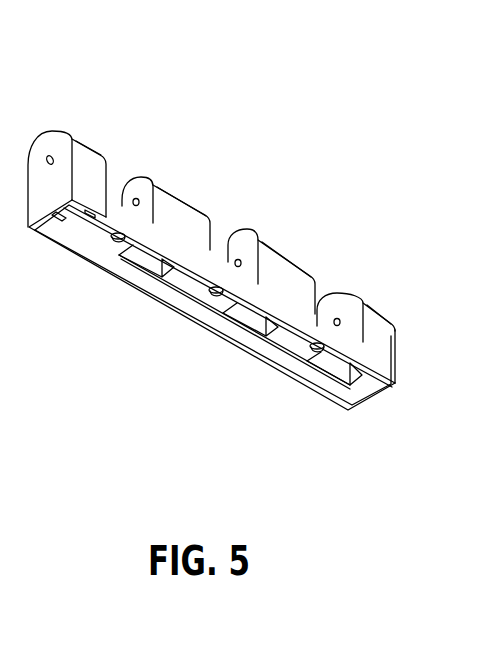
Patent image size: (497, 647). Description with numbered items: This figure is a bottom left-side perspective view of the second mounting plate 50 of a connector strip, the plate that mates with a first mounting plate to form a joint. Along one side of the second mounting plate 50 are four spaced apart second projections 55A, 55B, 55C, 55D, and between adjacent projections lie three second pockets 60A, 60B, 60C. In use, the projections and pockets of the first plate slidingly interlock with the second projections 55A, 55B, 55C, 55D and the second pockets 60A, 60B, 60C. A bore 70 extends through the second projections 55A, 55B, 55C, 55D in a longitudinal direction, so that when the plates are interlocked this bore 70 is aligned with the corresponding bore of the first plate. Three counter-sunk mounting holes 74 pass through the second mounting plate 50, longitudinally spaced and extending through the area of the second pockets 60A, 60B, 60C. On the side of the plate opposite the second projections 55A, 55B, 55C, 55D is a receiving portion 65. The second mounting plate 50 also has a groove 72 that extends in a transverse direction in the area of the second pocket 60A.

The second mounting plate 50 is at (204, 203).
The second projection 55A is at (78, 162).
The second projection 55B is at (168, 205).
The second projection 55C is at (285, 273).
The second projection 55D is at (380, 338).
The second pocket 60A is at (136, 199).
The second pocket 60B is at (227, 244).
The second pocket 60C is at (314, 302).
The receiving portion 65 is at (103, 256).
The bore 70 is at (47, 157).
The groove 72 is at (108, 240).
The mounting hole 74 is at (118, 243).